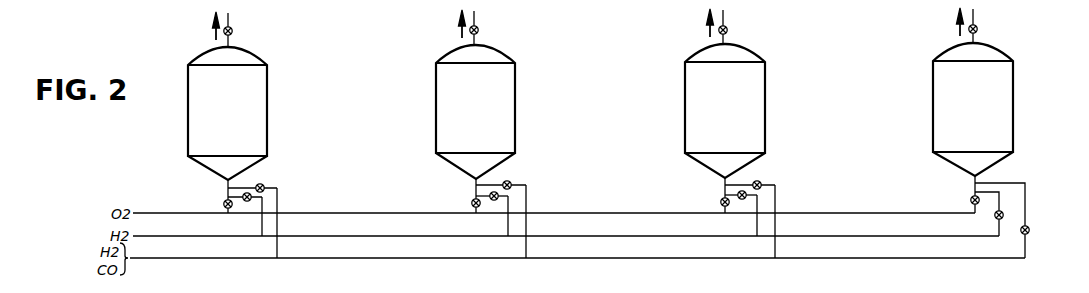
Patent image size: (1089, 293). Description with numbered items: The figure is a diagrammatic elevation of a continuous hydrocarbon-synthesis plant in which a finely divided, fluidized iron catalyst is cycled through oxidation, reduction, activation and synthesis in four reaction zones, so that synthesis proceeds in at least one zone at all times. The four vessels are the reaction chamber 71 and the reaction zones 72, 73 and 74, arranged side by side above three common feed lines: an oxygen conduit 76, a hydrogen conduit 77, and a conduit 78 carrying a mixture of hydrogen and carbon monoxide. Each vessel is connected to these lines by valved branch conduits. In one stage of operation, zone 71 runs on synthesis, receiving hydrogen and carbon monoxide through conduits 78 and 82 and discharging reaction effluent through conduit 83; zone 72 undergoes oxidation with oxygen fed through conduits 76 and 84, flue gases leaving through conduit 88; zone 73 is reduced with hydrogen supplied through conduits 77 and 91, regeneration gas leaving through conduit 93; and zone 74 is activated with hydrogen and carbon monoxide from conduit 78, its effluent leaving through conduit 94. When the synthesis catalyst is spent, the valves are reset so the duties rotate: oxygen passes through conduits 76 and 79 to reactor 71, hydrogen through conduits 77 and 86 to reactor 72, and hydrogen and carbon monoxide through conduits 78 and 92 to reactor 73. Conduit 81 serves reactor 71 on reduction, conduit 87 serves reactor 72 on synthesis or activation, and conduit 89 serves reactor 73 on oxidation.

The reaction chamber 71 is at (268, 100).
The reaction zone 72 is at (507, 88).
The reaction zone 73 is at (745, 104).
The reaction zone 74 is at (990, 88).
The oxygen conduit 76 is at (150, 213).
The hydrogen conduit 77 is at (170, 236).
The hydrogen and carbon monoxide conduit 78 is at (187, 258).
The conduit 79 is at (228, 186).
The conduit 81 is at (262, 230).
The conduit 82 is at (280, 230).
The conduit 83 is at (230, 18).
The conduit 84 is at (476, 190).
The conduit 86 is at (508, 230).
The conduit 87 is at (530, 230).
The conduit 88 is at (476, 17).
The conduit 89 is at (725, 192).
The conduit 91 is at (757, 228).
The conduit 92 is at (777, 247).
The conduit 93 is at (725, 16).
The conduit 94 is at (975, 15).